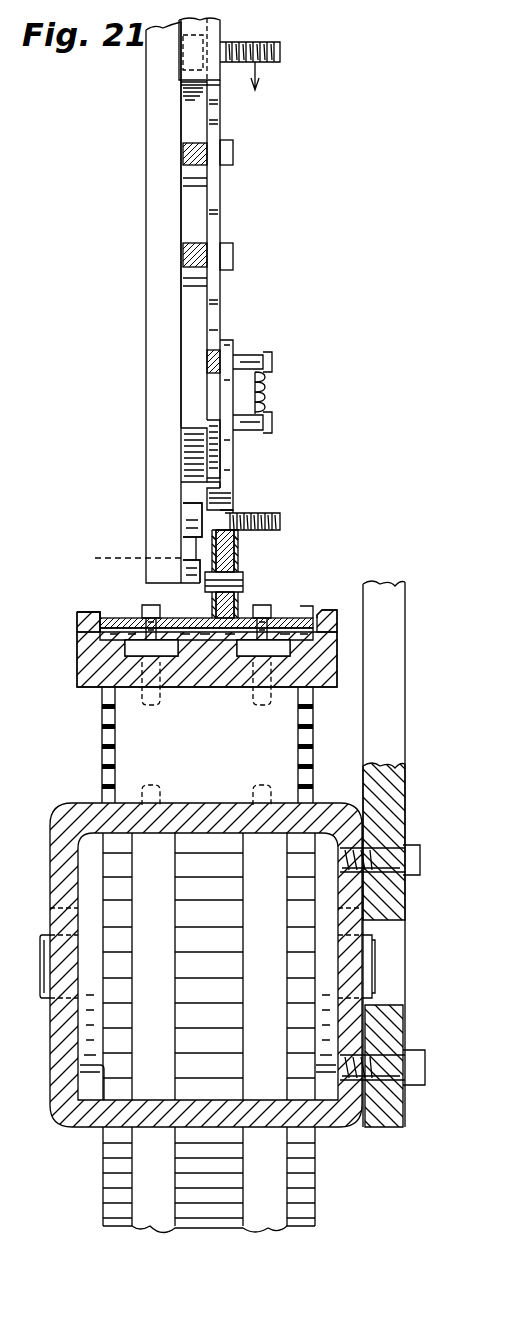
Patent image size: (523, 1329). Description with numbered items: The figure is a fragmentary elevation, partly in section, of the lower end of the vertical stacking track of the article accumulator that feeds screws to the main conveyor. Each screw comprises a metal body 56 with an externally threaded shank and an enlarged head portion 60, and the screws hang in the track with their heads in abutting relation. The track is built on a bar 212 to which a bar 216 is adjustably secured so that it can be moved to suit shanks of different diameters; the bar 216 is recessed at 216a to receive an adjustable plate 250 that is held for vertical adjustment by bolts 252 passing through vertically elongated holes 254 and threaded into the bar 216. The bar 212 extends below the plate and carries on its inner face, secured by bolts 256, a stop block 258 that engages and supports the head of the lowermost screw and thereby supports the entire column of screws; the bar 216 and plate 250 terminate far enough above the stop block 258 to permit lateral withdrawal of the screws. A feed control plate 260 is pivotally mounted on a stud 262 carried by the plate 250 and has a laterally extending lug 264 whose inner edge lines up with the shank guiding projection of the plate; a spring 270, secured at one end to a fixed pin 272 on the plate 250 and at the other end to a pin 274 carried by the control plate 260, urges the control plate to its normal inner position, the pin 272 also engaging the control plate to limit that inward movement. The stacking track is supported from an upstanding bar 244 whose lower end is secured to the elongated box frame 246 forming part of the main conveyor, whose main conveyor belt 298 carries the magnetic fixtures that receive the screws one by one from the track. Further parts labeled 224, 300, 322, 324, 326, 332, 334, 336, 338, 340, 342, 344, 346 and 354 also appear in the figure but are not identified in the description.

The metal body 56 is at (280, 46).
The enlarged head portion 60 is at (224, 25).
The bar 212 is at (158, 312).
The bar 216 is at (196, 98).
The recess 216a is at (220, 85).
The collar 224 is at (205, 83).
The upstanding bar 244 is at (388, 582).
The elongated box frame 246 is at (75, 810).
The adjustable plate 250 is at (214, 200).
The bolts 252 is at (185, 152).
The vertically elongated holes 254 is at (208, 186).
The bolts 256 is at (112, 559).
The stop block 258 is at (190, 518).
The feed control plate 260 is at (232, 455).
The stud 262 is at (235, 345).
The laterally extending lug 264 is at (222, 497).
The spring 270 is at (268, 397).
The fixed pin 272 is at (273, 422).
The pin 274 is at (256, 363).
The main conveyor belt 298 is at (300, 612).
The gasket 300 is at (100, 637).
The rails 322 is at (180, 690).
The base block 324 is at (100, 622).
The stack 326 is at (120, 1075).
The spring seat 332 is at (246, 514).
The stud head 334 is at (240, 569).
The threaded stud 336 is at (212, 608).
The thread 338 is at (242, 556).
The block 340 is at (190, 578).
The plate edge 342 is at (297, 606).
The base shoulder 344 is at (120, 620).
The bolt 346 is at (150, 606).
The nut 354 is at (245, 583).